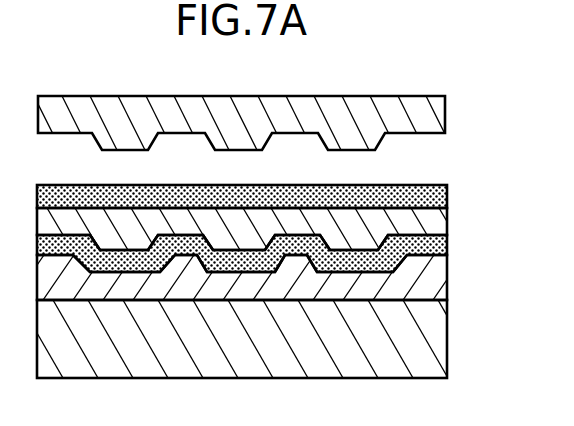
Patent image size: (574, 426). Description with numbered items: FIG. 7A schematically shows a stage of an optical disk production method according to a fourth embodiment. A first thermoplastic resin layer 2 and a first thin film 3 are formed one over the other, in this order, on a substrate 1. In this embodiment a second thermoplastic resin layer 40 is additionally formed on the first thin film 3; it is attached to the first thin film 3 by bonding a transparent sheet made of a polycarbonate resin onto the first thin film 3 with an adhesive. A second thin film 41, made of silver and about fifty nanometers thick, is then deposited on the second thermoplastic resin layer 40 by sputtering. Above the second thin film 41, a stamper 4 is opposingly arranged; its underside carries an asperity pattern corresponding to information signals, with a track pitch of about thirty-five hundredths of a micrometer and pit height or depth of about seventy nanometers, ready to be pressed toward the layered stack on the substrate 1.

The substrate 1 is at (430, 340).
The first thermoplastic resin layer 2 is at (430, 285).
The first thin film 3 is at (430, 245).
The second thermoplastic resin layer 40 is at (447, 219).
The second thin film 41 is at (447, 190).
The stamper 4 is at (440, 113).